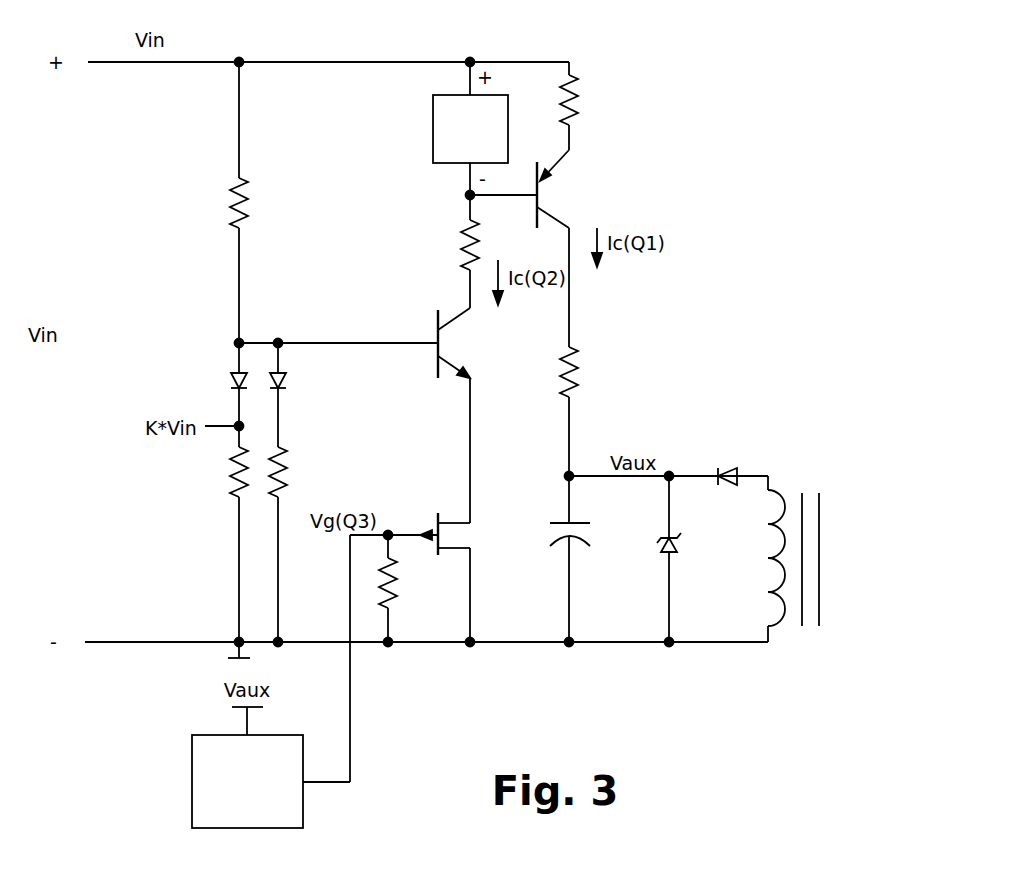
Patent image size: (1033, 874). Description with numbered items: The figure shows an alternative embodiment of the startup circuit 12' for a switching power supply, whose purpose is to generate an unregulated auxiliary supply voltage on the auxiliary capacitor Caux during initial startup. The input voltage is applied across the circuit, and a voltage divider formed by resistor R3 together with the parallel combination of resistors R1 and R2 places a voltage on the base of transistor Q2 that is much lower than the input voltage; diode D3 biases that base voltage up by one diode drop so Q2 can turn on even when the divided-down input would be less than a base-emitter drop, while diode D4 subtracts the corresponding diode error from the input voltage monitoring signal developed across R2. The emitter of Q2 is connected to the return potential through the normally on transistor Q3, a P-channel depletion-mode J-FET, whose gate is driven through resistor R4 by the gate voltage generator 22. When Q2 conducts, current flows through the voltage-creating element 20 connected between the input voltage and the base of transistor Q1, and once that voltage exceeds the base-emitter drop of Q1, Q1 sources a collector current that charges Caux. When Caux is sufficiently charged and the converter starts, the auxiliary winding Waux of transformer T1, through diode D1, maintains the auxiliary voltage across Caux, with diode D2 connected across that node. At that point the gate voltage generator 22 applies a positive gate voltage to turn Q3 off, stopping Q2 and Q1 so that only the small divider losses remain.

The startup circuit 12' is at (765, 73).
The voltage-creating (V-C) element 20 is at (470, 129).
The Vg generator (Vg GEN) 22 is at (247, 781).
The resistor R1 is at (295, 544).
The resistor R2 is at (222, 534).
The resistor R3 is at (256, 203).
The resistor R4 is at (403, 588).
The diode D1 is at (728, 487).
The diode D2 is at (680, 559).
The diode D3 is at (297, 395).
The diode D4 is at (220, 384).
The transistor Q1 is at (567, 189).
The transistor Q2 is at (465, 343).
The normally on transistor (depletion-mode J-FET) Q3 is at (444, 577).
The auxiliary capacitor Caux is at (596, 559).
The power transformer T1 is at (758, 556).
The auxiliary winding Waux is at (780, 622).